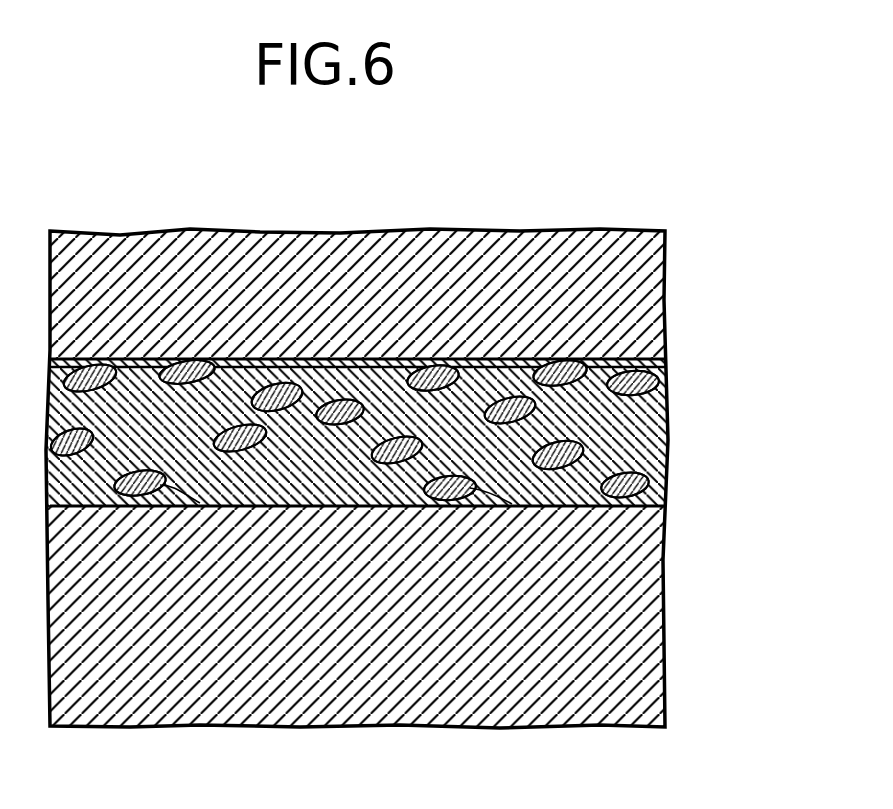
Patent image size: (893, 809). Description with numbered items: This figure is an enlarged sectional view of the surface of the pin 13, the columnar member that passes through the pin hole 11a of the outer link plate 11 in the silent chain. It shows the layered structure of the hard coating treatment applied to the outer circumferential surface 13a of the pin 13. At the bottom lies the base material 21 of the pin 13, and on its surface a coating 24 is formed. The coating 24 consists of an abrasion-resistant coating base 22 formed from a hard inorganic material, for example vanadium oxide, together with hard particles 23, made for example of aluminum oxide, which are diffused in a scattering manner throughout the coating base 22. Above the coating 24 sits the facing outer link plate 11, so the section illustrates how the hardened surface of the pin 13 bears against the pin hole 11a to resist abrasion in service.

The outer link plate 11 is at (646, 313).
The pin hole 11a is at (368, 360).
The pin 13 is at (418, 497).
The outer circumferential surface 13a is at (337, 395).
The base material 21 is at (380, 656).
The coating base 22 is at (468, 444).
The hard particles 23 is at (262, 393).
The coating 24 is at (397, 433).